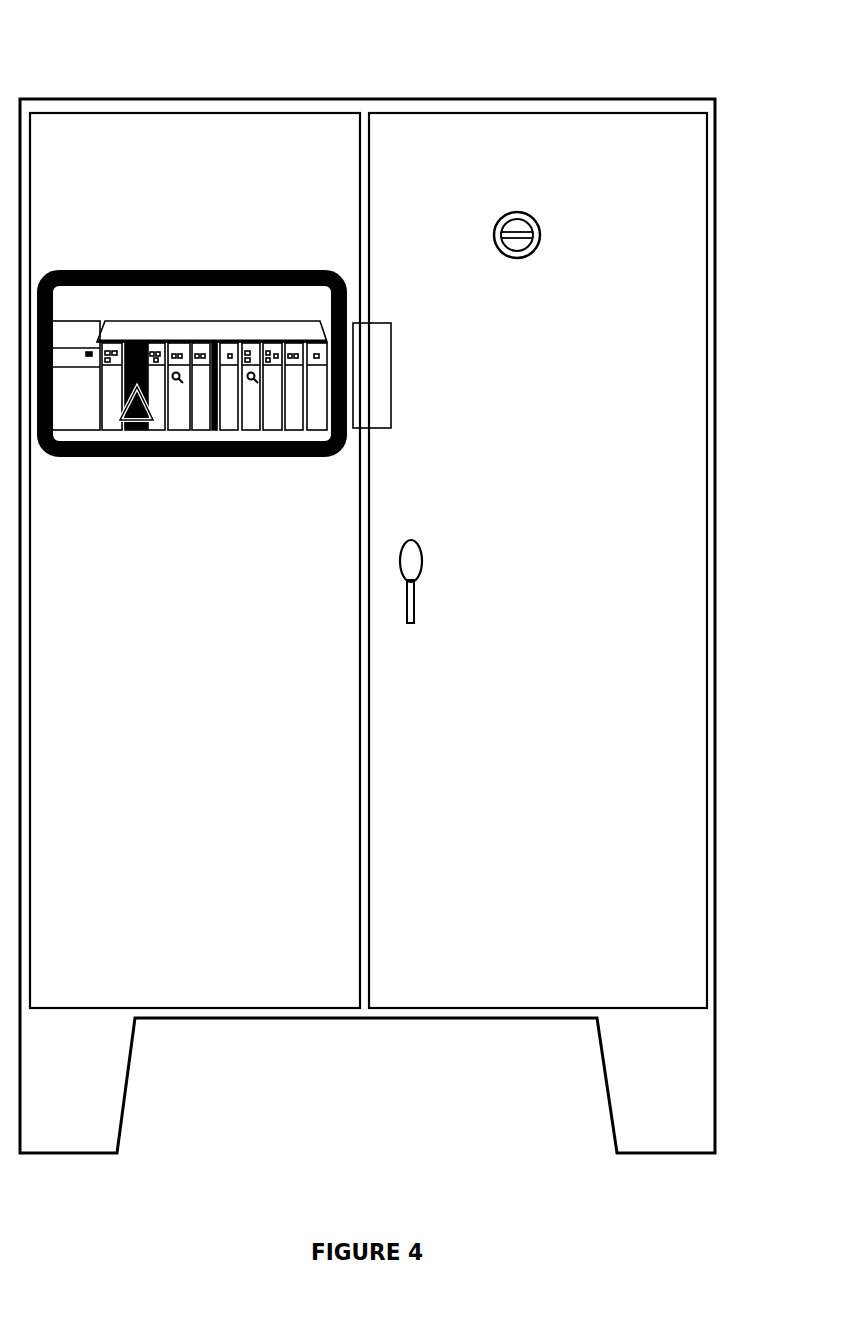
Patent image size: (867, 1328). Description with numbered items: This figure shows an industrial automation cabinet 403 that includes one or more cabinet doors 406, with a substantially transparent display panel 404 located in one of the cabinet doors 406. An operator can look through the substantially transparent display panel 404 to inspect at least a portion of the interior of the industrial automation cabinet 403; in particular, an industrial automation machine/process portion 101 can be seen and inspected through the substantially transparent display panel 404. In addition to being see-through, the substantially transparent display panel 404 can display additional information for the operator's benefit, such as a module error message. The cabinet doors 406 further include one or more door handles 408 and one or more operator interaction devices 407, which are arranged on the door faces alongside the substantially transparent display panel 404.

The industrial automation machine/process portion 101 is at (391, 373).
The industrial automation cabinet 403 is at (330, 1018).
The substantially transparent display panel 404 is at (263, 455).
The cabinet doors 406 is at (319, 113).
The operator interaction device 407 is at (517, 212).
The door handle 408 is at (423, 555).